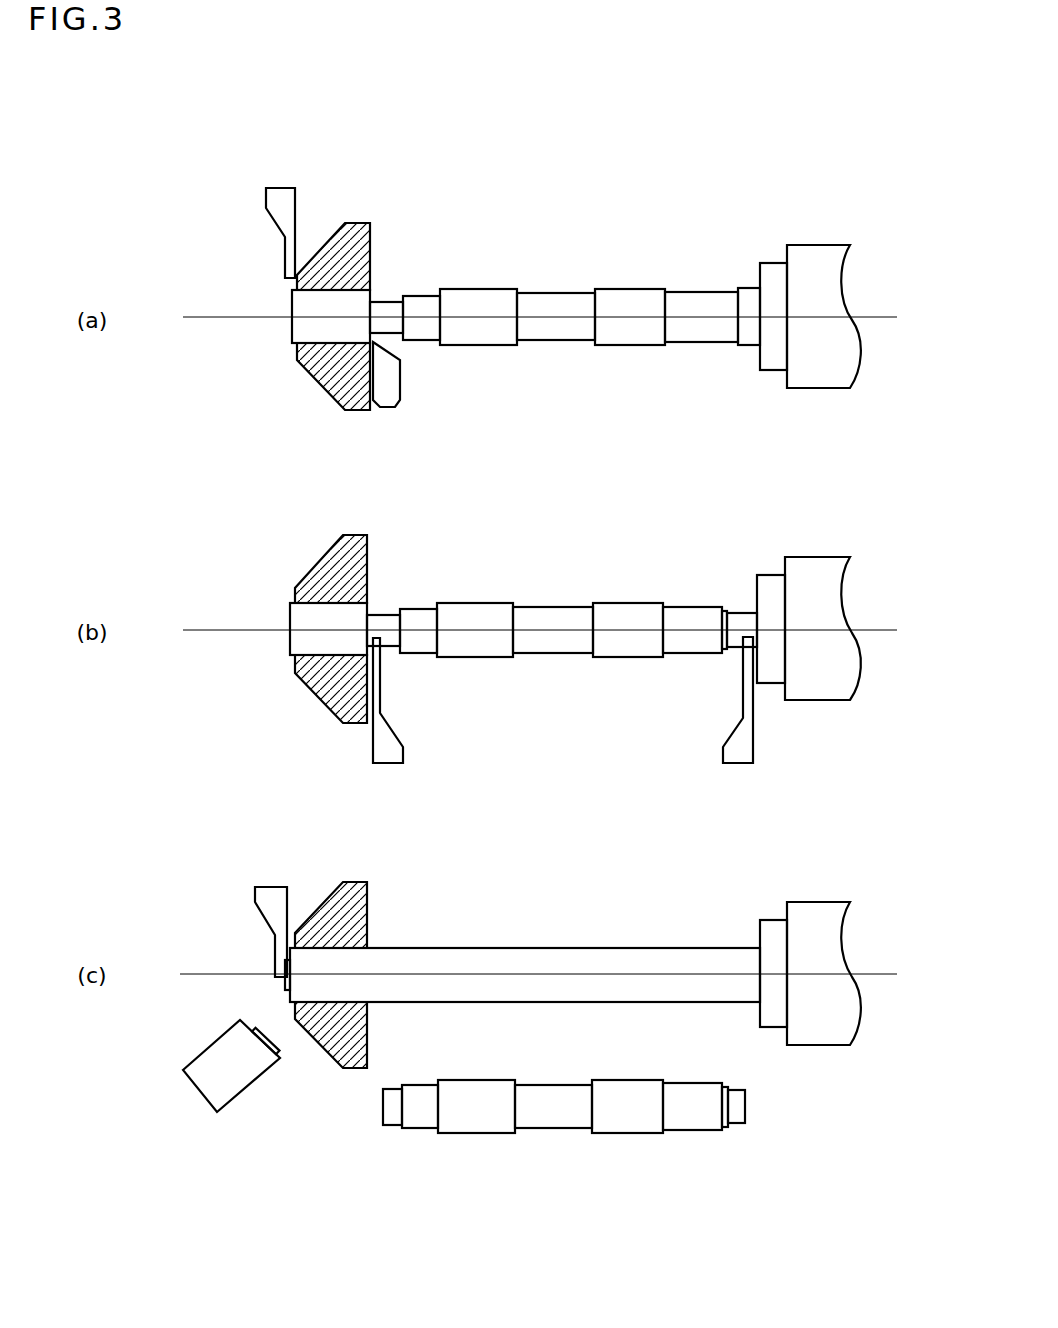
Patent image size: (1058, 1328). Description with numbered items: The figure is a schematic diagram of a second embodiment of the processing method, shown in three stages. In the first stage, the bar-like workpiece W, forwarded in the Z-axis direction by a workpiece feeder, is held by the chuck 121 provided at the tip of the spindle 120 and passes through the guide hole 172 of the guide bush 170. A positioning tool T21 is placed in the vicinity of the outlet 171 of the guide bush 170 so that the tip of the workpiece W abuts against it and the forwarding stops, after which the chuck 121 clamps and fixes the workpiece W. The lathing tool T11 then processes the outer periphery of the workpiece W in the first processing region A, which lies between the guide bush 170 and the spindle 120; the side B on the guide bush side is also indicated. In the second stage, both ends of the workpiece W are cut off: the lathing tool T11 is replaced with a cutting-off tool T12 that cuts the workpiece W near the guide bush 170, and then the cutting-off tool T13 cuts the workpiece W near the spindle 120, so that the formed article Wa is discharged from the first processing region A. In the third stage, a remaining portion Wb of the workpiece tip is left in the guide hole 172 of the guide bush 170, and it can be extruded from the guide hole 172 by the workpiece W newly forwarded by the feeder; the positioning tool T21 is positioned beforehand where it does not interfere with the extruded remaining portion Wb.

The spindle 120 is at (787, 245).
The chuck 121 is at (758, 262).
The guide bush 170 is at (372, 245).
The outlet 171 is at (293, 336).
The guide hole 172 is at (333, 292).
The workpiece W is at (473, 287).
The formed article Wa is at (427, 1117).
The remaining portion Wb is at (222, 1092).
The first processing region A is at (582, 225).
The chuck side B is at (250, 275).
The lathing tool T11 is at (402, 378).
The cutting-off tool T12 is at (385, 680).
The cutting-off tool T13 is at (742, 678).
The positioning tool T21 is at (298, 189).